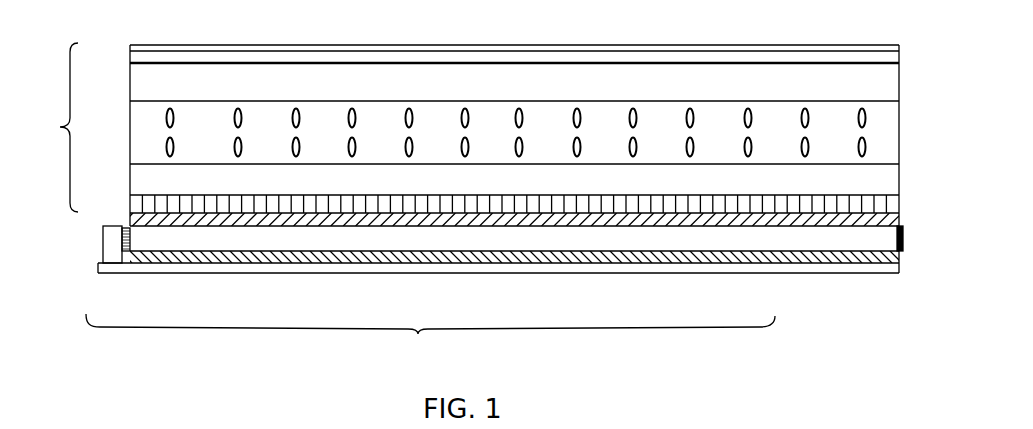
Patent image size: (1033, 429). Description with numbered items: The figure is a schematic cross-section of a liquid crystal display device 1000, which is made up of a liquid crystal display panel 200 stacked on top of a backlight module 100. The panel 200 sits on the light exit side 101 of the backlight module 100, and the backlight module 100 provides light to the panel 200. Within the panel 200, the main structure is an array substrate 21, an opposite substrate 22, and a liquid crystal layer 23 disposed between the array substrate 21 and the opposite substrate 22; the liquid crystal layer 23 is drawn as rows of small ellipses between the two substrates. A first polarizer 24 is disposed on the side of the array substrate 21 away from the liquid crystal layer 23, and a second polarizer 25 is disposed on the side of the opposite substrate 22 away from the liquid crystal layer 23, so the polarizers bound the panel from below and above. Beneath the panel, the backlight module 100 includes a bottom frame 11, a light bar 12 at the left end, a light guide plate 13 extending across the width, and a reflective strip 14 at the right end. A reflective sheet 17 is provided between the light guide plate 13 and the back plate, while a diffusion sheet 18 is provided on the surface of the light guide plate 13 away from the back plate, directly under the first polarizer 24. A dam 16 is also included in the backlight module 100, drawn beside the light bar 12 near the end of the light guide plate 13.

The display device 1000 is at (72, 24).
The liquid crystal display panel 200 is at (54, 127).
The backlight module 100 is at (430, 336).
The second polarizer 25 is at (157, 55).
The opposite substrate 22 is at (157, 73).
The liquid crystal layer 23 is at (152, 133).
The array substrate 21 is at (152, 182).
The first polarizer 24 is at (158, 205).
The diffusion sheet 18 is at (297, 220).
The light guide plate 13 is at (252, 238).
The reflective sheet 17 is at (198, 258).
The bottom frame 11 is at (162, 268).
The light bar 12 is at (113, 257).
The dam 16 is at (128, 250).
The reflective strip 14 is at (898, 243).
The light exit side 101 is at (905, 197).